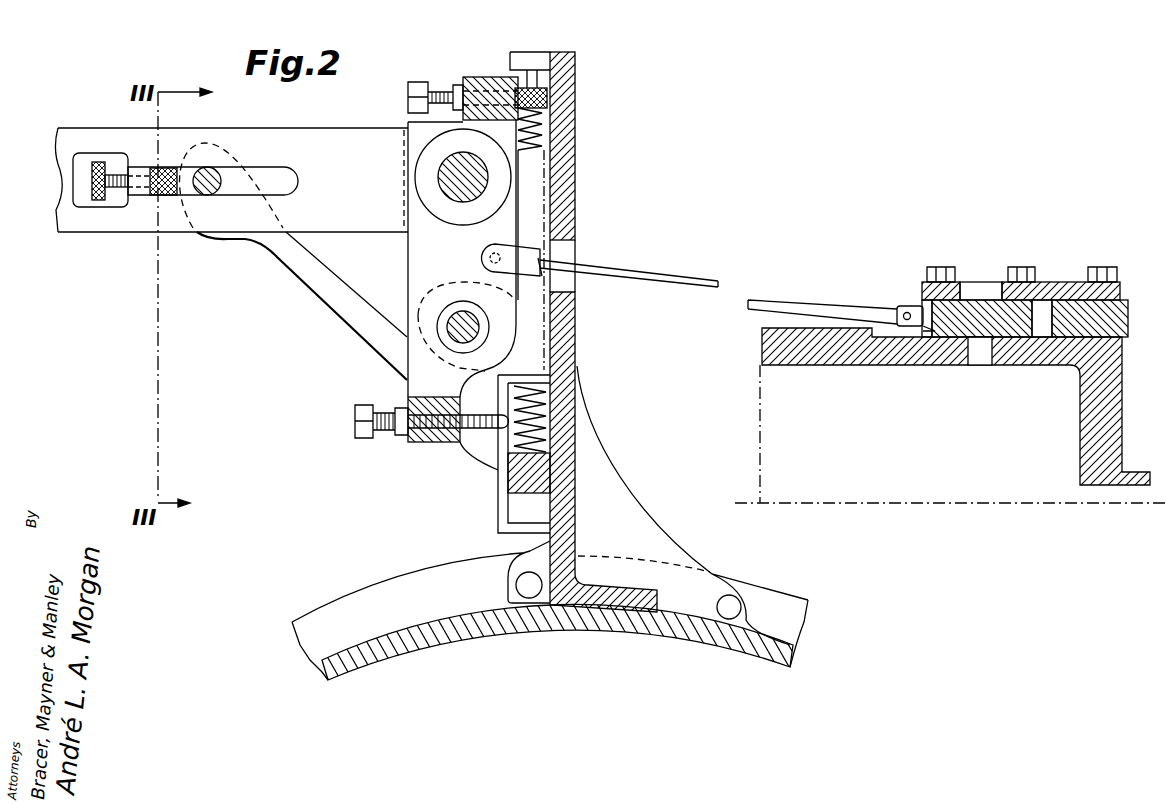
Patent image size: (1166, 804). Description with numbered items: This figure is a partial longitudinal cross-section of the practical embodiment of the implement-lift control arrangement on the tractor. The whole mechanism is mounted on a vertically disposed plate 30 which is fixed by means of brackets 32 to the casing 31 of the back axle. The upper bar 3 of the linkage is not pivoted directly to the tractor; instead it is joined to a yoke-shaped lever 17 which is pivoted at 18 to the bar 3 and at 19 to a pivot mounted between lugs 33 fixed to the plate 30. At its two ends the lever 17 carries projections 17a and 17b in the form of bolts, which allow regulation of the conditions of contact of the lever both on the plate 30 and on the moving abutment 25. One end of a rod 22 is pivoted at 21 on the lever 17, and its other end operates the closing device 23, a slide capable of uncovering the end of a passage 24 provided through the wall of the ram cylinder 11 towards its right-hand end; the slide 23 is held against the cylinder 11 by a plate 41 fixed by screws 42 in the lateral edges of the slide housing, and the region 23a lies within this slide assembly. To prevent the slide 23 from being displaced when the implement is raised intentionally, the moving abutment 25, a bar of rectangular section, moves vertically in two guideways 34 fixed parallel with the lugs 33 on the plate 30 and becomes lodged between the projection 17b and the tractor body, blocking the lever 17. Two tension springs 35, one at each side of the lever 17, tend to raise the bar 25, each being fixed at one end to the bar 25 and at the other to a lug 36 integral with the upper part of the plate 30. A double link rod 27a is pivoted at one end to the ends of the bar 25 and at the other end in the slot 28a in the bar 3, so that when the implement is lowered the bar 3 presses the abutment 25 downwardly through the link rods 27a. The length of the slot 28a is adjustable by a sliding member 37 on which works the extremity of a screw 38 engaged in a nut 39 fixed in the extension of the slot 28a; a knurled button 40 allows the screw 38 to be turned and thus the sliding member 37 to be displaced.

The upper bar 3 is at (356, 138).
The ram cylinder 11 is at (1106, 422).
The lever 17 is at (424, 284).
The projection 17a is at (547, 83).
The projection 17b is at (428, 443).
The pivot 18 is at (456, 192).
The pivot 19 is at (486, 320).
The pivot 21 is at (482, 259).
The rod 22 is at (822, 311).
The closing device 23 is at (975, 302).
The gap 23a is at (1042, 332).
The passage 24 is at (976, 366).
The moving abutment 25 is at (552, 473).
The link rod 27a is at (306, 275).
The slot 28a is at (264, 174).
The plate 30 is at (577, 147).
The casing 31 is at (471, 612).
The bracket 32 is at (654, 531).
The lugs 33 is at (418, 315).
The guideways 34 is at (506, 404).
The tension spring 35 is at (548, 121).
The lug 36 is at (510, 62).
The sliding member 37 is at (188, 184).
The screw 38 is at (118, 188).
The nut 39 is at (143, 168).
The knurled button 40 is at (104, 164).
The plate 41 is at (1061, 286).
The screws 42 is at (1022, 268).